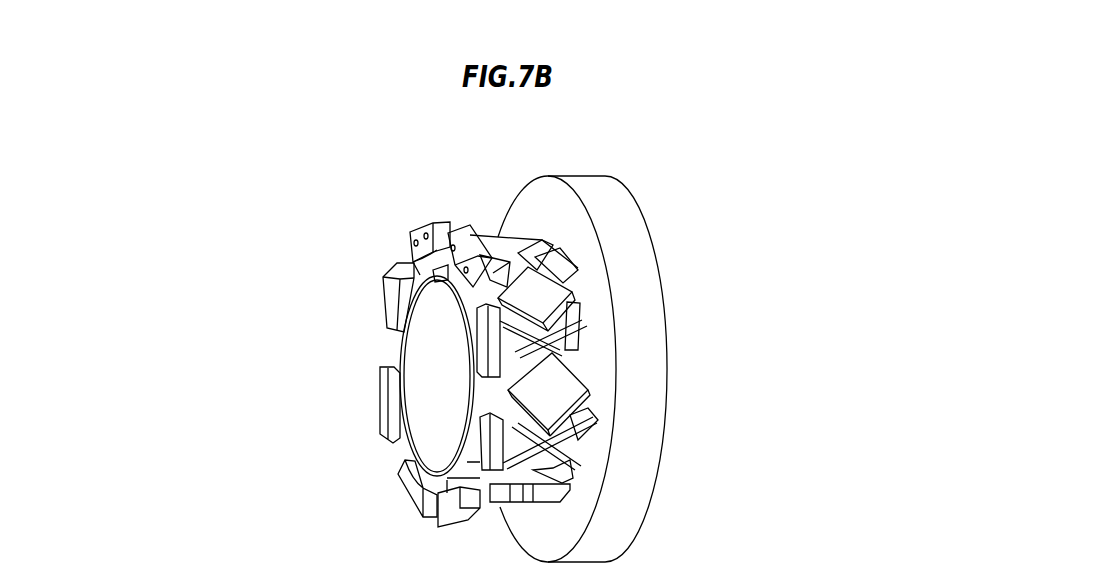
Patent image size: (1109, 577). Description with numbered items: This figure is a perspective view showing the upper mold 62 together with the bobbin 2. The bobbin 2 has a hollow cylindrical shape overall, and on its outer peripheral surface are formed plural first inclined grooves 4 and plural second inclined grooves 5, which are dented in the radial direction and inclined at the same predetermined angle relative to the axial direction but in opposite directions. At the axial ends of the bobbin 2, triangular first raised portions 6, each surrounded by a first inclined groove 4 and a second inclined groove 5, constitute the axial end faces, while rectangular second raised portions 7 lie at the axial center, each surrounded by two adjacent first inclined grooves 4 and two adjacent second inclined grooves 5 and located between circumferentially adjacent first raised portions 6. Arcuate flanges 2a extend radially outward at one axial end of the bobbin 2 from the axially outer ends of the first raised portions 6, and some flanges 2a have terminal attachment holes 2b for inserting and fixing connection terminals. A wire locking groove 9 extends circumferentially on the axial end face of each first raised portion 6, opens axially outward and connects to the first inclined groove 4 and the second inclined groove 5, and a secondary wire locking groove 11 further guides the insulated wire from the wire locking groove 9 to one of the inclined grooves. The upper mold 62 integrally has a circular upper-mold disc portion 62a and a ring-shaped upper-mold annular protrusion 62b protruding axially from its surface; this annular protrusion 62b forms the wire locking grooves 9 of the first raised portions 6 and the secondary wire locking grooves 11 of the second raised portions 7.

The upper mold 62 is at (531, 339).
The upper-mold disc portion 62a is at (644, 368).
The upper-mold annular protrusion 62b is at (580, 312).
The bobbin 2 is at (548, 352).
The flange 2a is at (410, 238).
The terminal attachment hole 2b is at (427, 233).
The first inclined groove 4 is at (507, 406).
The second inclined groove 5 is at (517, 365).
The first raised portion 6 is at (592, 352).
The second raised portion 7 is at (553, 392).
The wire locking groove 9 is at (590, 408).
The secondary wire locking groove 11 is at (580, 468).